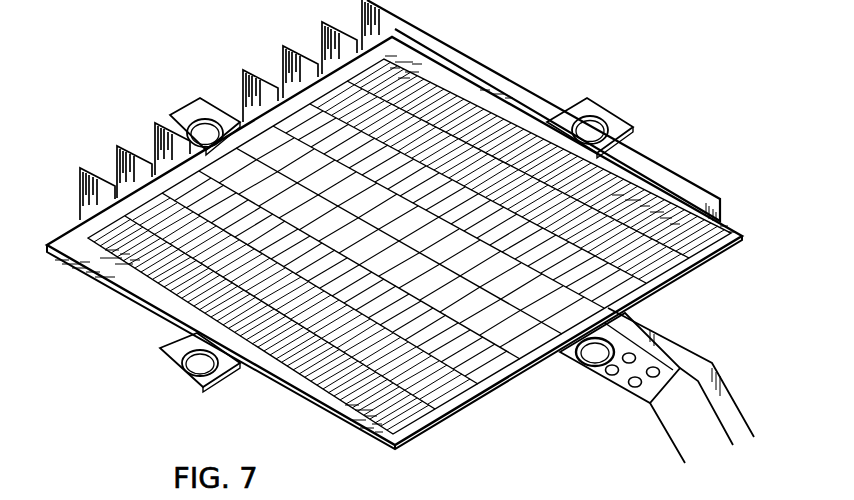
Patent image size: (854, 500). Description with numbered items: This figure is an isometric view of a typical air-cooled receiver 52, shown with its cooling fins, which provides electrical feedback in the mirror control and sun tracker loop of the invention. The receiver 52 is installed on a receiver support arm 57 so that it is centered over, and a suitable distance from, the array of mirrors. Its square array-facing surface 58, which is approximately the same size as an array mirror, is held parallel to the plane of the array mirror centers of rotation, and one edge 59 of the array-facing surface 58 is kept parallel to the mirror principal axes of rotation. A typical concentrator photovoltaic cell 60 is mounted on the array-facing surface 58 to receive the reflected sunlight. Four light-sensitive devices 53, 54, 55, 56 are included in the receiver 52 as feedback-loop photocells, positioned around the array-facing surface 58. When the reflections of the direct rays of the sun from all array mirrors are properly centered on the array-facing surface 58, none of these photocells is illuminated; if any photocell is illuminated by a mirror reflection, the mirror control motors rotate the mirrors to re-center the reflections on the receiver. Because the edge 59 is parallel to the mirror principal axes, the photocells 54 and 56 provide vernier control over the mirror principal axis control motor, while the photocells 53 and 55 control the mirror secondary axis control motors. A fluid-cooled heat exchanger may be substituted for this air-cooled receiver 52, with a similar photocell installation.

The receiver 52 is at (274, 44).
The light-sensitive device 53 is at (204, 129).
The light-sensitive device 54 is at (593, 127).
The light-sensitive device 55 is at (595, 360).
The light-sensitive device 56 is at (182, 360).
The receiver support arm 57 is at (665, 433).
The array-facing surface 58 is at (718, 250).
The edge 59 is at (345, 419).
The concentrator photovoltaic cell 60 is at (494, 356).